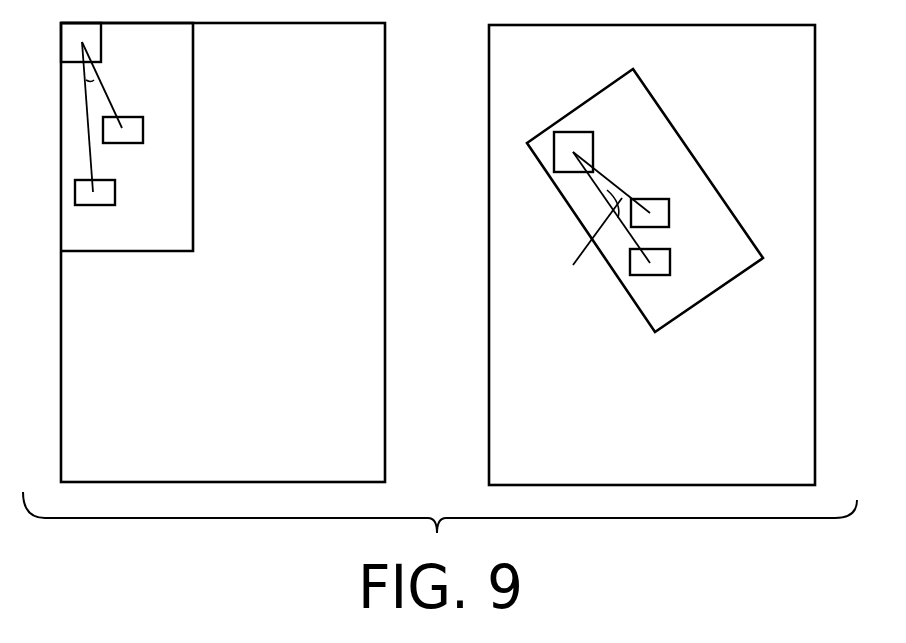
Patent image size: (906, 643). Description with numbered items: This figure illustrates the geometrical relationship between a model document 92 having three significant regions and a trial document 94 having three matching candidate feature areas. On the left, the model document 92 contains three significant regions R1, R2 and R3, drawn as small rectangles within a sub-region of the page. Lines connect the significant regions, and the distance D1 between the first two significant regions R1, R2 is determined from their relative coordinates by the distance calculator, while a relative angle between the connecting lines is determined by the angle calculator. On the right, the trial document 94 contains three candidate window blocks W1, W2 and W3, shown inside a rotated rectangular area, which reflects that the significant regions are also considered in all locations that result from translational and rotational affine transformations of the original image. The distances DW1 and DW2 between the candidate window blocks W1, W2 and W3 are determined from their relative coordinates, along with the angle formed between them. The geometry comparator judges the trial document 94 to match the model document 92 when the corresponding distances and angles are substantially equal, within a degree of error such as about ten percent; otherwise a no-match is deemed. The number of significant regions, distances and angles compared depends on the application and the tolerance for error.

The model document 92 is at (128, 251).
The significant region R1 is at (101, 42).
The significant region R2 is at (143, 135).
The significant region R3 is at (115, 192).
The distance D1 is at (133, 95).
The trial document 94 is at (637, 305).
The candidate window block W1 is at (577, 132).
The candidate window block W2 is at (669, 210).
The candidate window block W3 is at (670, 260).
The distance DW1 is at (613, 182).
The distance DW2 is at (606, 187).